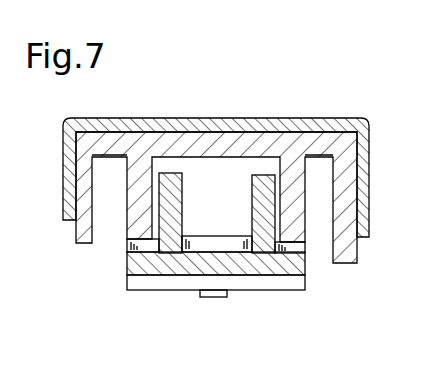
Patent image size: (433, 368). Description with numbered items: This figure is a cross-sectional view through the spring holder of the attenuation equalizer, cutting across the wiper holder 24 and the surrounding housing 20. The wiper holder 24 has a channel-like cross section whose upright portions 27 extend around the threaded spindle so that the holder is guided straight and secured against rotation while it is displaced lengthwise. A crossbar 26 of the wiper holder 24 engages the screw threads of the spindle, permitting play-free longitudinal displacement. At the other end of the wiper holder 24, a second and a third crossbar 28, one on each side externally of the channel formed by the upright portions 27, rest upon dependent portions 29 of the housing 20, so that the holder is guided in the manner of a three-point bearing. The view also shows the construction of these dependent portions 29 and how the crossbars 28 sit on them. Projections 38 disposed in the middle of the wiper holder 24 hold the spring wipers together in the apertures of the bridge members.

The housing 20 is at (242, 133).
The dependent portions 29 is at (130, 198).
The upright portions 27 is at (250, 182).
The crossbar 26 is at (217, 240).
The crossbars 28 is at (125, 245).
The wiper holder 24 is at (282, 268).
The projections 38 is at (218, 297).